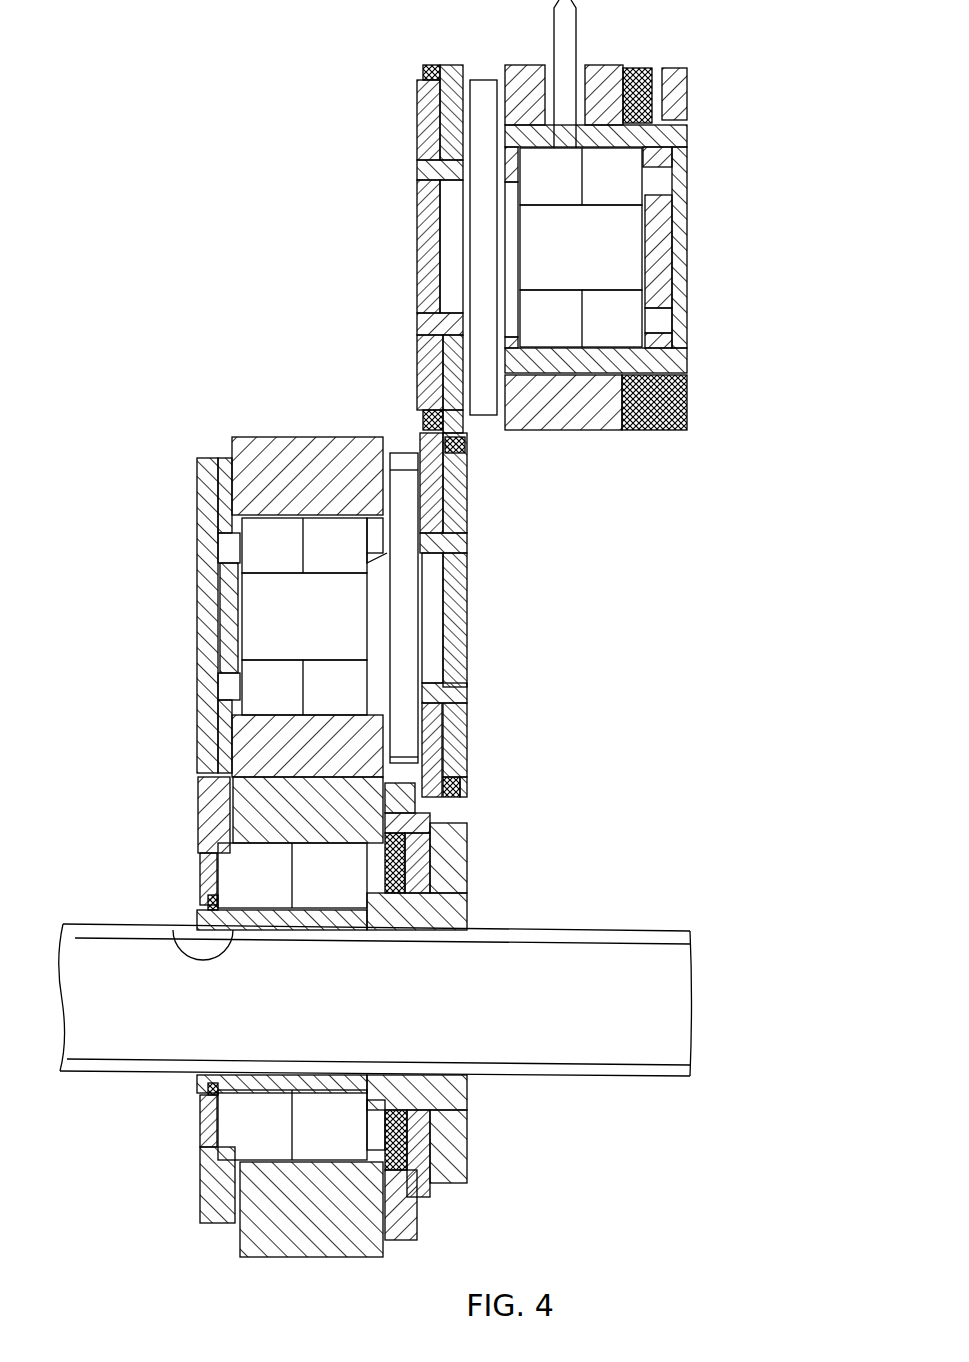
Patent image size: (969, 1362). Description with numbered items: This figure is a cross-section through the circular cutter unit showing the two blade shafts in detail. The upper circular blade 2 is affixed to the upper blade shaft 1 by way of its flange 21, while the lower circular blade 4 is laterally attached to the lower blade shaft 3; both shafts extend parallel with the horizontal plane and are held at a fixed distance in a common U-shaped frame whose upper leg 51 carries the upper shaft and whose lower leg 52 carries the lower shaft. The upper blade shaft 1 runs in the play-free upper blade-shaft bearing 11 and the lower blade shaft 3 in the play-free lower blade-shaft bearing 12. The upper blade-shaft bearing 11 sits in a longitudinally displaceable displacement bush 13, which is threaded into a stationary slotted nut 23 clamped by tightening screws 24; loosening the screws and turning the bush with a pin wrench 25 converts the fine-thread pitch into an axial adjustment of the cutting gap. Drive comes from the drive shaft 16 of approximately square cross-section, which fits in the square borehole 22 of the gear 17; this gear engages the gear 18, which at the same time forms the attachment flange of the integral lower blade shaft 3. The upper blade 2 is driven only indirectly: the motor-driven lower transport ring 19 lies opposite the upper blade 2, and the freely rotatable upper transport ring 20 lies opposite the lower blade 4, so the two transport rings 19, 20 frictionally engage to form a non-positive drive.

The upper blade shaft 1 is at (598, 228).
The upper circular blade 2 is at (455, 75).
The lower blade shaft 3 is at (288, 590).
The lower circular blade 4 is at (430, 448).
The upper blade-shaft bearing 11 is at (610, 307).
The lower blade-shaft bearing 12 is at (288, 675).
The displacement bush 13 is at (688, 138).
The drive shaft 16 is at (520, 962).
The gear 17 is at (430, 800).
The gear 18 is at (395, 615).
The lower transport ring 19 is at (458, 498).
The upper transport ring 20 is at (422, 372).
The flange 21 is at (484, 86).
The borehole 22 is at (175, 930).
The slotted nut 23 is at (640, 68).
The tightening screws 24 is at (688, 92).
The pin wrench 25 is at (568, 30).
The upper leg 51 is at (568, 408).
The lower leg 52 is at (288, 440).